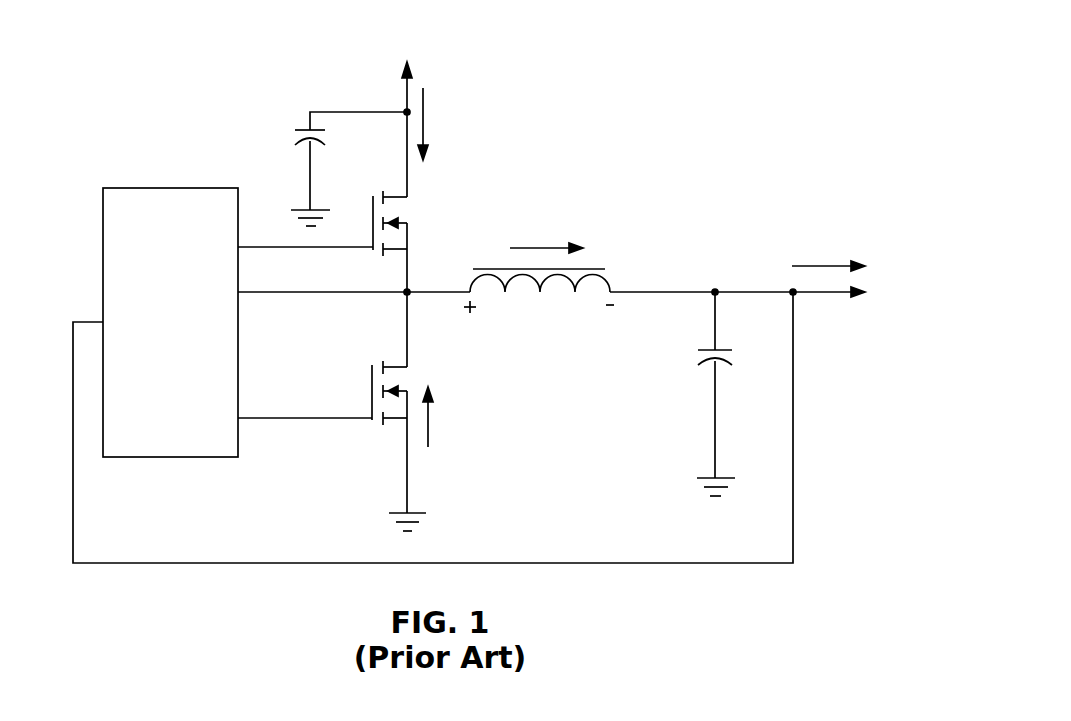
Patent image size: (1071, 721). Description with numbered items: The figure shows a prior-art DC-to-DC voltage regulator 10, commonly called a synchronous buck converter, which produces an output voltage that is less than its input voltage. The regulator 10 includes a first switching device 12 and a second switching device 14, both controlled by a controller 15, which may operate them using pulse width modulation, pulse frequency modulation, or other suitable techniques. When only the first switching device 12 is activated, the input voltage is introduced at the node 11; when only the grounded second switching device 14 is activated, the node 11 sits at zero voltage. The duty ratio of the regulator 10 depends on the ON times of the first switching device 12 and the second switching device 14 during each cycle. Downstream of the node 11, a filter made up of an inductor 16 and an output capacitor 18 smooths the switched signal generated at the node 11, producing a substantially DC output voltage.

The DC-to-DC voltage regulator 10 is at (631, 33).
The node 11 is at (407, 292).
The first switching device 12 is at (410, 232).
The second switching device 14 is at (393, 423).
The controller 15 is at (162, 186).
The inductor 16 is at (610, 282).
The output capacitor 18 is at (725, 350).